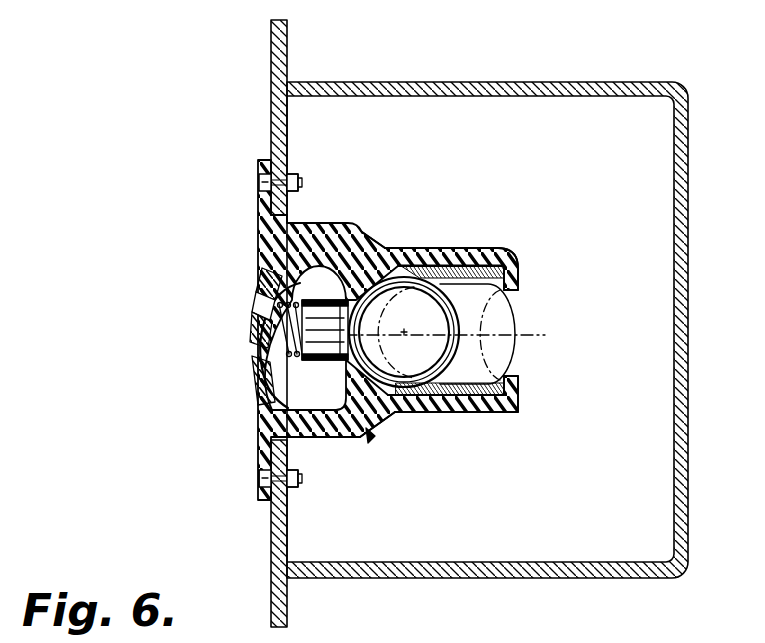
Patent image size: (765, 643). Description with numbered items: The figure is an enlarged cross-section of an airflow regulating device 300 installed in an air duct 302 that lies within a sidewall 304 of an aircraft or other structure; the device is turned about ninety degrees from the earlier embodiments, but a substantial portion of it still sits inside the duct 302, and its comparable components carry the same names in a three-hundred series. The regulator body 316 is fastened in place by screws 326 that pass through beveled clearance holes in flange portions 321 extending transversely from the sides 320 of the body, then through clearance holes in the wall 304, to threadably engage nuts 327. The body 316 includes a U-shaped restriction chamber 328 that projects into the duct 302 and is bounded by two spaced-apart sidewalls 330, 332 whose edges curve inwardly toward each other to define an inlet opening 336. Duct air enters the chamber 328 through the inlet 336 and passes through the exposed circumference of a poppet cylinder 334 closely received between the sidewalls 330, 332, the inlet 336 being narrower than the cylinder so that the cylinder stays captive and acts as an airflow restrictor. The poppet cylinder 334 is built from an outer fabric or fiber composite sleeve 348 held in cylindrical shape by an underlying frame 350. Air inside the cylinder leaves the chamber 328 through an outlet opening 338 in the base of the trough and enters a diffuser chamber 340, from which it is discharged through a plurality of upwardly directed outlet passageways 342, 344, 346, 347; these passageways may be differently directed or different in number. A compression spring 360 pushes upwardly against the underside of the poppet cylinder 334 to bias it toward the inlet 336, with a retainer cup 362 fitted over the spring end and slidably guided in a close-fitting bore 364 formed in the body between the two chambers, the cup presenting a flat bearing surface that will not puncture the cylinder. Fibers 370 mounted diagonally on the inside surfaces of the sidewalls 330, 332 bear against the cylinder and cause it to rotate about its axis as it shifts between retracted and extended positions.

The airflow regulating device 300 is at (560, 162).
The air duct 302 is at (415, 570).
The sidewall 304 is at (268, 596).
The regulator body 316 is at (372, 436).
The sides 320 is at (316, 222).
The flange portions 321 is at (258, 181).
The screws 326 is at (260, 486).
The nuts 327 is at (292, 178).
The restriction chamber 328 is at (522, 300).
The sidewall of restriction chamber 330 is at (436, 248).
The sidewall of restriction chamber 332 is at (460, 413).
The poppet cylinder 334 is at (520, 336).
The inlet opening 336 is at (520, 360).
The outlet opening 338 is at (398, 414).
The diffuser chamber 340 is at (305, 372).
The outlet passageway 342 is at (266, 276).
The outlet passageway 344 is at (282, 296).
The outlet passageway 346 is at (268, 314).
The outlet passageway 347 is at (272, 400).
The sleeve 348 is at (488, 308).
The frame 350 is at (446, 356).
The compression spring 360 is at (262, 304).
The retainer cup 362 is at (273, 253).
The bore 364 is at (368, 246).
The fibers 370 is at (515, 270).